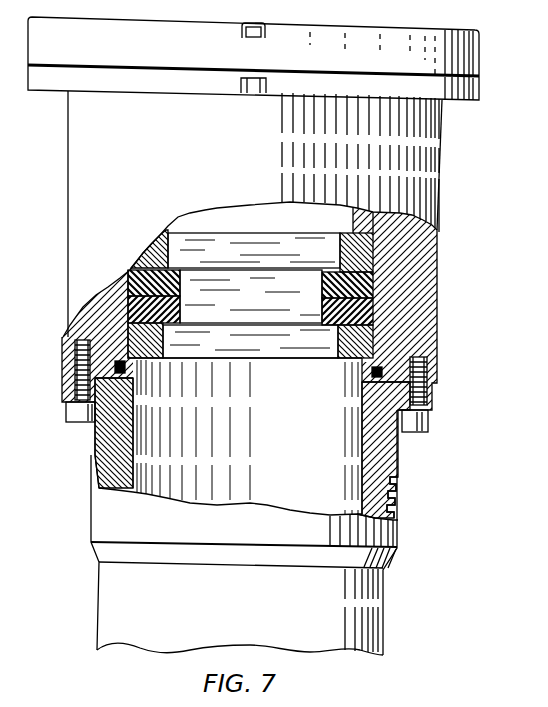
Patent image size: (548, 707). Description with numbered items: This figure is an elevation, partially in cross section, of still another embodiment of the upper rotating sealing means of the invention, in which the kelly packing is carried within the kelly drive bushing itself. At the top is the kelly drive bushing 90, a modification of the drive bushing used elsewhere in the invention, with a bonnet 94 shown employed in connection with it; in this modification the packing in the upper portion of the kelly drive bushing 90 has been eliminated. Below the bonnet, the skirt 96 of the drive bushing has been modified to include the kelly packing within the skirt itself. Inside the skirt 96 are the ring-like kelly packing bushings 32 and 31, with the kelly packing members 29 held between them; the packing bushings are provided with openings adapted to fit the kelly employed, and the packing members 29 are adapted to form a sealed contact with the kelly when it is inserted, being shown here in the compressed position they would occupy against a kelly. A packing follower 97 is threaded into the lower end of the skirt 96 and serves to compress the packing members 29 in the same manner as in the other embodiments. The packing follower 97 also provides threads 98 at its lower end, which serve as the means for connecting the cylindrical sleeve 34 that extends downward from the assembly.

The bonnet 94 is at (471, 60).
The kelly drive bushing 90 is at (481, 80).
The skirt 96 is at (428, 310).
The kelly packing bushing 32 is at (340, 253).
The kelly packing members 29 is at (322, 310).
The kelly packing bushing 31 is at (338, 349).
The packing follower 97 is at (384, 464).
The threads 98 is at (397, 495).
The cylindrical sleeve 34 is at (378, 622).